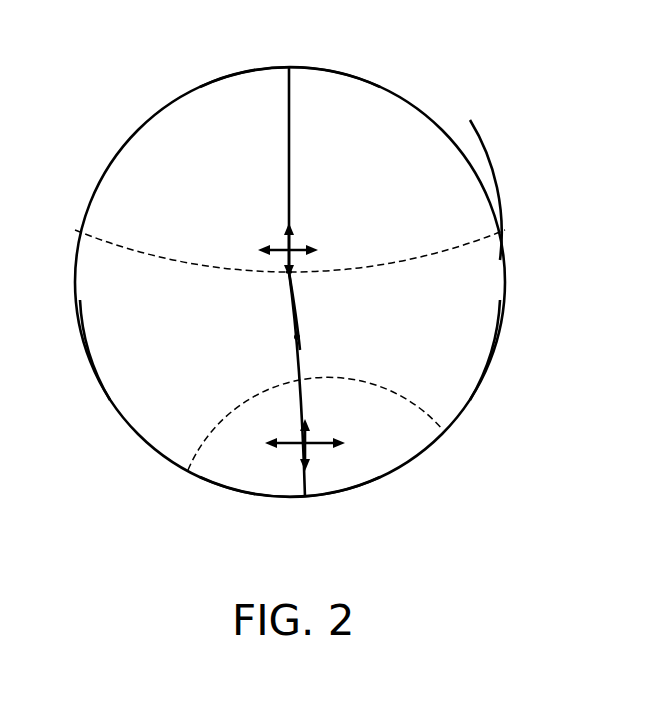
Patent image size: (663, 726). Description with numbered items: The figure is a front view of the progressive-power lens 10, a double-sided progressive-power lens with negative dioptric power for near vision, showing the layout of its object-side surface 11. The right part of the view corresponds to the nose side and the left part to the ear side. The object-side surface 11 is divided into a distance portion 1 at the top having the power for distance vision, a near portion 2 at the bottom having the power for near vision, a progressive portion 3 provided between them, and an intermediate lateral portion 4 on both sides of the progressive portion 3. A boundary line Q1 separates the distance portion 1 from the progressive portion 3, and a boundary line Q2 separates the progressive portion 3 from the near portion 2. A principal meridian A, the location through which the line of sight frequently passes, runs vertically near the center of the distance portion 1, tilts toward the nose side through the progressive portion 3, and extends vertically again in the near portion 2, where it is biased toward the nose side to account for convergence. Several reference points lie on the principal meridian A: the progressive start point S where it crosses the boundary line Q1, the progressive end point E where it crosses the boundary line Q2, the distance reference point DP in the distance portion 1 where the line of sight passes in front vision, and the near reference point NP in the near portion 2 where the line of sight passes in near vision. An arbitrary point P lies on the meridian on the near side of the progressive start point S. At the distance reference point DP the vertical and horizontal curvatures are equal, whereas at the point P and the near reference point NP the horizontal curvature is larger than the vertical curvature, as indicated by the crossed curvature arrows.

The progressive-power lens 10 is at (470, 70).
The distance portion 1 is at (242, 85).
The near portion 2 is at (246, 488).
The progressive portion 3 is at (270, 305).
The intermediate lateral portion 4 is at (90, 341).
The object-side surface 11 is at (477, 207).
The principal meridian A is at (291, 120).
The progressive end point E is at (307, 378).
The progressive start point S is at (296, 276).
The arbitrary point P is at (294, 337).
The distance reference point DP is at (262, 250).
The near reference point NP is at (300, 442).
The boundary line Q1 is at (180, 261).
The boundary line Q2 is at (220, 421).